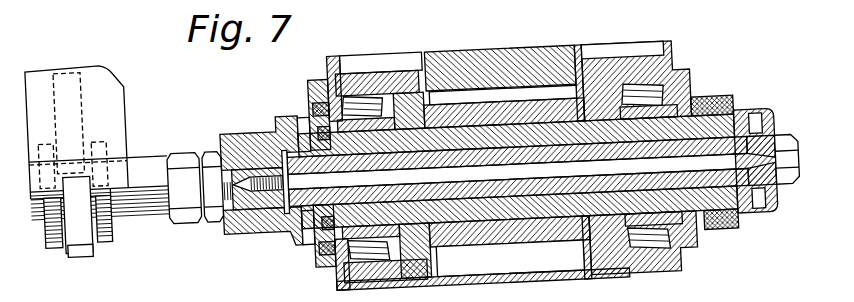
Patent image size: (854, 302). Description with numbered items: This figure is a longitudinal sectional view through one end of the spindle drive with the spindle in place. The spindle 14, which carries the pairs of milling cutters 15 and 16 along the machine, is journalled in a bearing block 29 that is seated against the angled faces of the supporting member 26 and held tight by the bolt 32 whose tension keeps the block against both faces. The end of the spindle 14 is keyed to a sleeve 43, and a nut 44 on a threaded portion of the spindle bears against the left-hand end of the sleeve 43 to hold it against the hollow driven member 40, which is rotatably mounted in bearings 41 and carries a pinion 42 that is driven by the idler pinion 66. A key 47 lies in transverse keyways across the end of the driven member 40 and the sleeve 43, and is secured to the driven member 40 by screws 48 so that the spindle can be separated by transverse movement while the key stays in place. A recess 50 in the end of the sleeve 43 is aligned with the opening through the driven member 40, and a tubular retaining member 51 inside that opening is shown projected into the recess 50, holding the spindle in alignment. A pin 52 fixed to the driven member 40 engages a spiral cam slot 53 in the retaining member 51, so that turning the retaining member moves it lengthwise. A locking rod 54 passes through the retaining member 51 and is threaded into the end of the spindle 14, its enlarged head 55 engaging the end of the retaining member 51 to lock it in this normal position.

The spindle 14 is at (149, 164).
The milling cutter 15 is at (110, 228).
The milling cutter 16 is at (48, 219).
The supporting member 26 is at (124, 95).
The bearing block 29 is at (78, 228).
The bolt 32 is at (80, 250).
The driven member 40 is at (316, 249).
The bearings 41 is at (657, 270).
The pinion 42 is at (573, 263).
The sleeve 43 is at (240, 136).
The nut 44 is at (214, 151).
The key 47 is at (311, 112).
The screws 48 is at (313, 253).
The recess 50 is at (271, 236).
The retaining member 51 is at (352, 220).
The pin 52 is at (709, 250).
The cam slot 53 is at (665, 174).
The locking rod 54 is at (529, 170).
The enlarged head 55 is at (789, 210).
The idler pinion 66 is at (553, 66).